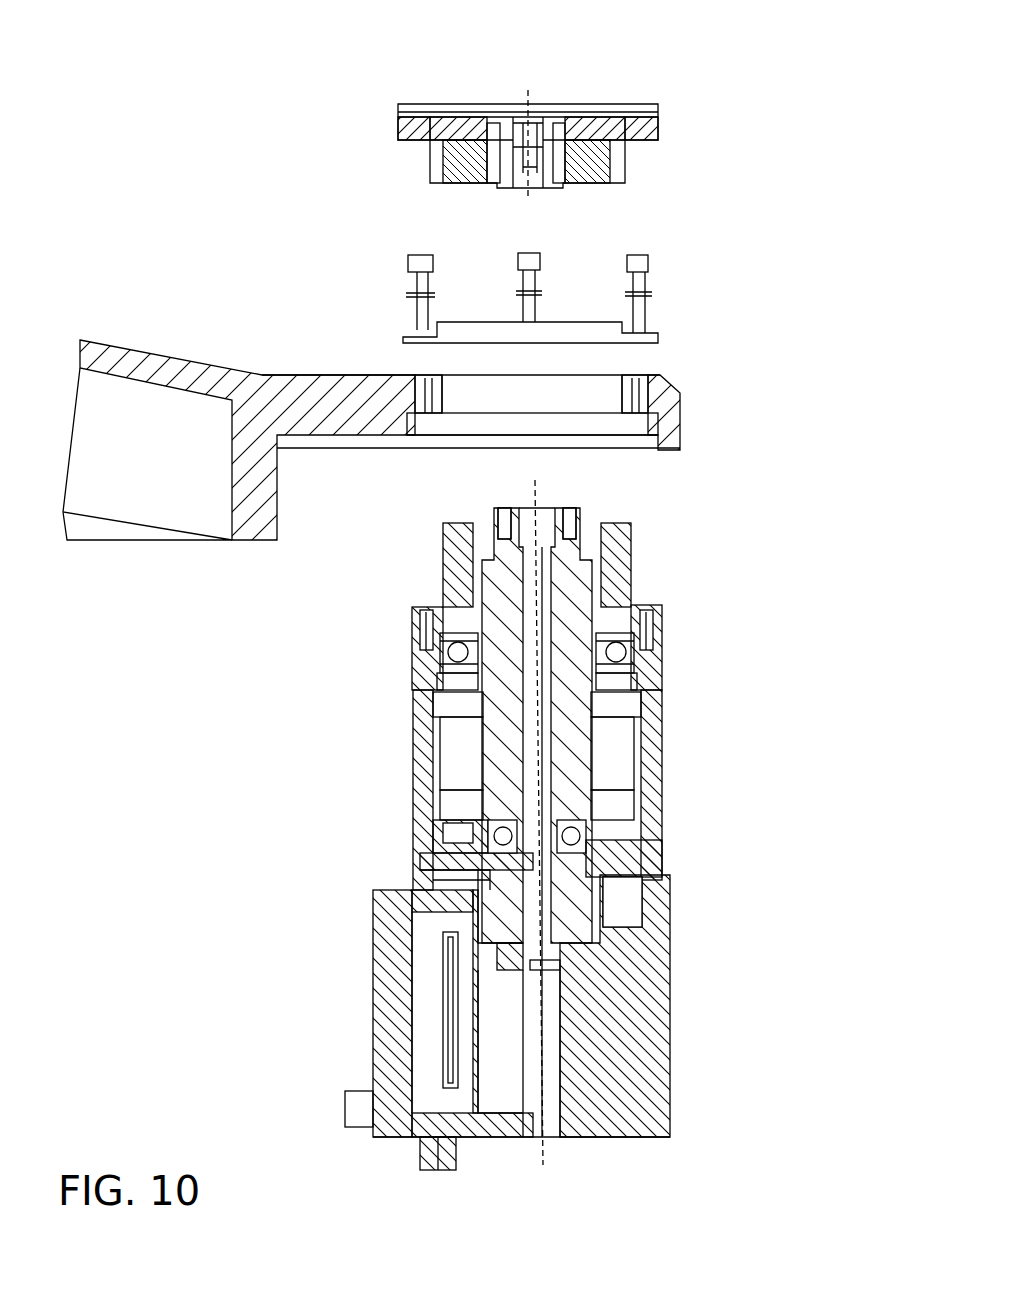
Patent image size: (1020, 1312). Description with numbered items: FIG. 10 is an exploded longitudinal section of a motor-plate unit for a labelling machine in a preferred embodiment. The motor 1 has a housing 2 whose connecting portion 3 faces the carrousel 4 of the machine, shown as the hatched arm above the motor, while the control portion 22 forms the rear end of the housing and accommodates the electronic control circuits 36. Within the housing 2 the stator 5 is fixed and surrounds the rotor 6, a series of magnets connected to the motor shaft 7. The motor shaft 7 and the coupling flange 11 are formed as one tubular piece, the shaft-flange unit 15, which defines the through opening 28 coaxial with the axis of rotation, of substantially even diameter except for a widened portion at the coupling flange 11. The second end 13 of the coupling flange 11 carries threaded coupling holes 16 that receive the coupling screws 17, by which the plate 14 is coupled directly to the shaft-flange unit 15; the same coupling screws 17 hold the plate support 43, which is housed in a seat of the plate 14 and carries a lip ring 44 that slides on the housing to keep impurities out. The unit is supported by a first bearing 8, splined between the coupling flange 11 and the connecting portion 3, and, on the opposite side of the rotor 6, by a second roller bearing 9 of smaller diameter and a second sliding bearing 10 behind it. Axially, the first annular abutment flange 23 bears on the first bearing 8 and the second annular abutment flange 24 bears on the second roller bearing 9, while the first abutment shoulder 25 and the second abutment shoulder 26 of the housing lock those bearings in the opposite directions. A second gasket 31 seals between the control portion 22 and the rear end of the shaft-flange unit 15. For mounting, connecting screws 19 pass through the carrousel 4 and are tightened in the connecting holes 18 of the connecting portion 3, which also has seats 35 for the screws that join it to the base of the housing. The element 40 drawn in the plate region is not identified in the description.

The motor 1 is at (656, 575).
The housing 2 is at (650, 776).
The connecting portion 3 is at (665, 645).
The carrousel 4 is at (298, 374).
The stator 5 is at (440, 760).
The rotor 6 is at (433, 735).
The motor shaft 7 is at (600, 735).
The first bearing 8 is at (445, 655).
The second roller bearing 9 is at (433, 826).
The second sliding bearing 10 is at (425, 882).
The coupling flange 11 is at (544, 516).
The second end 13 is at (578, 511).
The plate 14 is at (660, 138).
The shaft-flange unit 15 is at (592, 790).
The coupling holes 16 is at (505, 516).
The coupling screws 17 is at (493, 112).
The connecting holes 18 is at (660, 632).
The connecting screws 19 is at (418, 283).
The control portion 22 is at (655, 1012).
The first annular abutment flange 23 is at (645, 690).
The second annular abutment flange 24 is at (595, 815).
The first abutment shoulder 25 is at (636, 614).
The second abutment shoulder 26 is at (658, 840).
The through opening 28 is at (543, 842).
The second gasket 31 is at (478, 948).
The seats 35 is at (413, 618).
The electronic control circuits 36 is at (450, 1000).
The seal 40 is at (458, 104).
The plate support 43 is at (581, 187).
The lip ring 44 is at (447, 183).